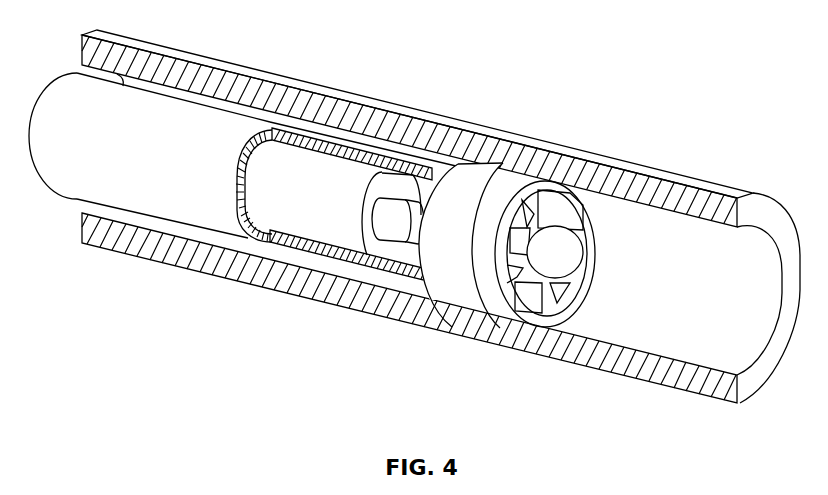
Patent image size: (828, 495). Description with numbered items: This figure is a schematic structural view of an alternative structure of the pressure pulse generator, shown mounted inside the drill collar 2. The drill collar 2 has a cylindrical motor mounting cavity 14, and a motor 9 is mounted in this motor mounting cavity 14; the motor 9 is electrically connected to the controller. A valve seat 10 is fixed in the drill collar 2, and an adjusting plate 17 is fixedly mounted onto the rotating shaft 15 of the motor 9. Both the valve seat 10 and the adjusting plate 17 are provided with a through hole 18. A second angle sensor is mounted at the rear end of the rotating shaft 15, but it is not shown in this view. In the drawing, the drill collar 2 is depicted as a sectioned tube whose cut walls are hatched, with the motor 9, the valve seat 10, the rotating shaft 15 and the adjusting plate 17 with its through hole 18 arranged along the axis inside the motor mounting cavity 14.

The drill collar 2 is at (385, 120).
The motor 9 is at (305, 187).
The valve seat 10 is at (445, 268).
The motor mounting cavity 14 is at (207, 208).
The rotating shaft 15 is at (393, 217).
The adjusting plate 17 is at (527, 307).
The through hole 18 is at (552, 218).